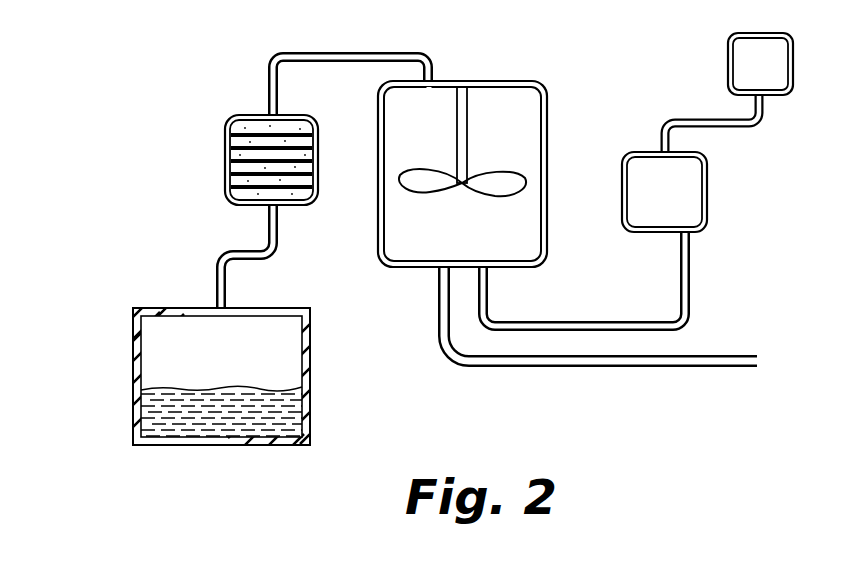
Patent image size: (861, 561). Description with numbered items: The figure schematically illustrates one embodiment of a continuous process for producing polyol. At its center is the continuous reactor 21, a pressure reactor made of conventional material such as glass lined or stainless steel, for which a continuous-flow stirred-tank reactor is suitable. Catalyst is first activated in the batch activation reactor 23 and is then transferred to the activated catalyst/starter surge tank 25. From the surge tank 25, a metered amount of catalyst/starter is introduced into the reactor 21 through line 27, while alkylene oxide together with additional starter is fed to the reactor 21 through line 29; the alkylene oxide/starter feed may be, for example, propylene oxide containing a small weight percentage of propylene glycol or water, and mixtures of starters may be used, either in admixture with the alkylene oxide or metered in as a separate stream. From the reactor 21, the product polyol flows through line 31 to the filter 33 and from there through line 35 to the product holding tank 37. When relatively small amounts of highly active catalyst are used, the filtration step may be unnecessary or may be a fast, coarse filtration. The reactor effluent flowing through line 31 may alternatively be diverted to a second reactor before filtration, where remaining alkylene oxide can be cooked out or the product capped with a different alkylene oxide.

The continuous reactor 21 is at (523, 130).
The batch activation reactor 23 is at (728, 75).
The activated catalyst/starter surge tank 25 is at (710, 205).
The line 27 is at (538, 320).
The line 29 is at (545, 367).
The line 31 is at (363, 52).
The filter 33 is at (238, 177).
The line 35 is at (213, 282).
The product holding tank 37 is at (180, 417).